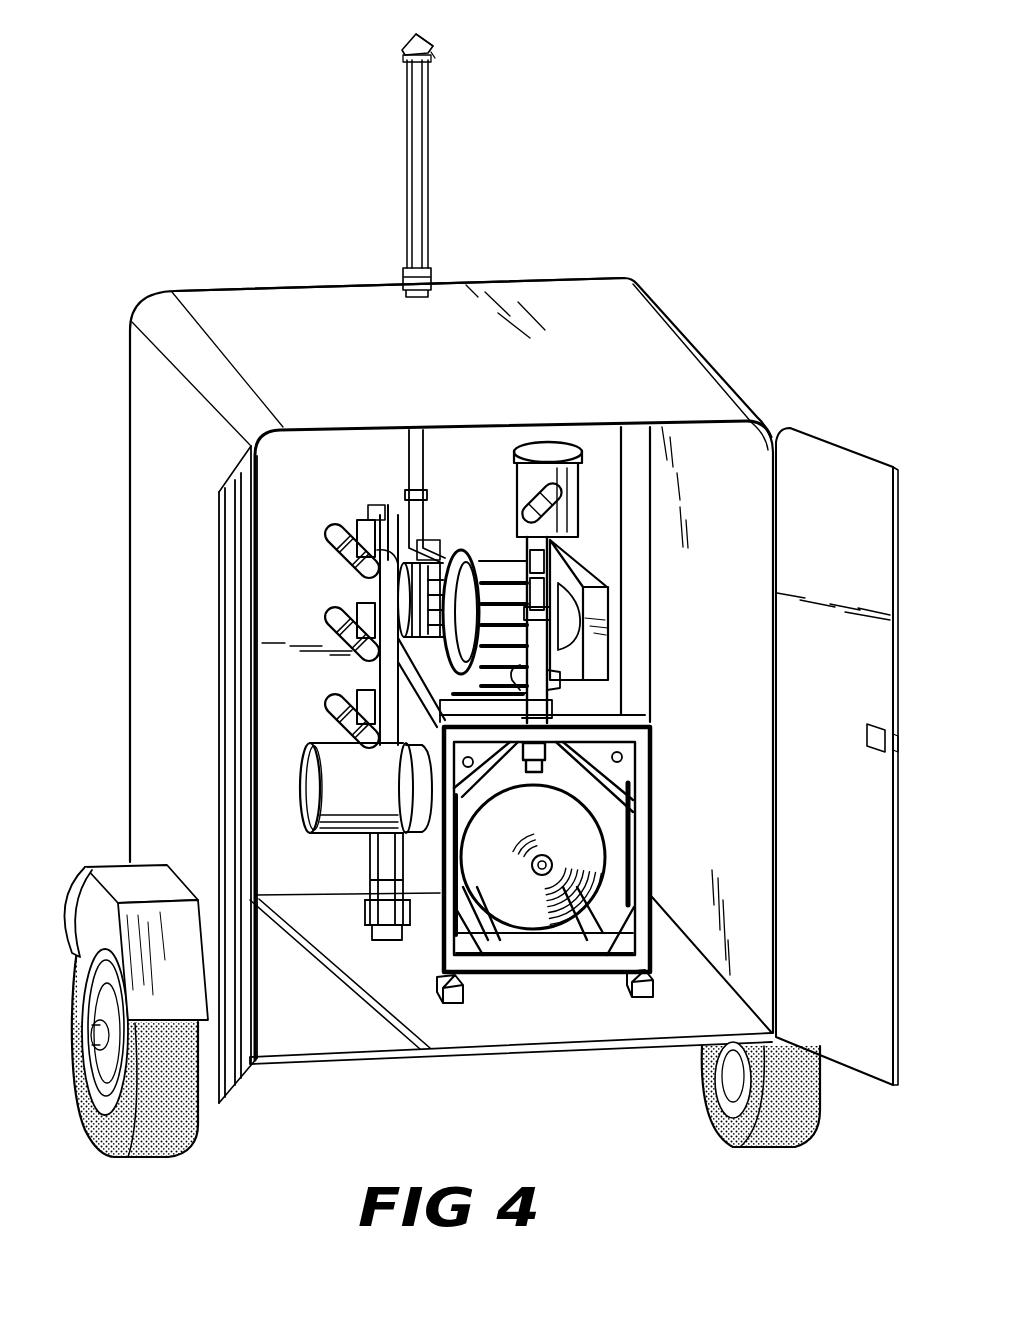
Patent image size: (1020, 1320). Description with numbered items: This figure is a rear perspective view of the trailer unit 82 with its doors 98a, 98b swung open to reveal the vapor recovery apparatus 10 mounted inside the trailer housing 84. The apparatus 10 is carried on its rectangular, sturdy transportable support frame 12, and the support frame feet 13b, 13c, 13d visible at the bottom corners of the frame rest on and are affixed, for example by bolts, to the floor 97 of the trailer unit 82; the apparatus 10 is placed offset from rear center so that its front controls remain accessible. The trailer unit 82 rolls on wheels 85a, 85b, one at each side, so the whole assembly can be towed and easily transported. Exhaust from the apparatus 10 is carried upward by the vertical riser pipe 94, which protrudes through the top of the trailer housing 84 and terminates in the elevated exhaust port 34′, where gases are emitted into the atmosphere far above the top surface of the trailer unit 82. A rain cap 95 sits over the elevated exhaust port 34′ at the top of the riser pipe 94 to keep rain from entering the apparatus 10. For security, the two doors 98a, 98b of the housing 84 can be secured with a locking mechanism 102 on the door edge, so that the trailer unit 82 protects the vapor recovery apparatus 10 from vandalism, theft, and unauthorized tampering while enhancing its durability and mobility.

The vapor recovery apparatus 10 is at (463, 515).
The transportable support frame 12 is at (645, 765).
The support frame foot 13b is at (362, 908).
The support frame foot 13c is at (435, 985).
The support frame foot 13d is at (630, 980).
The elevated exhaust port 34′ is at (431, 48).
The trailer unit 82 is at (708, 250).
The trailer housing 84 is at (524, 297).
The wheel 85a is at (708, 1104).
The wheel 85b is at (192, 1125).
The vertical riser pipe 94 is at (420, 208).
The rain cap 95 is at (404, 43).
The floor 97 is at (520, 1022).
The door 98a is at (247, 1065).
The door 98b is at (870, 1062).
The locking mechanism 102 is at (893, 745).